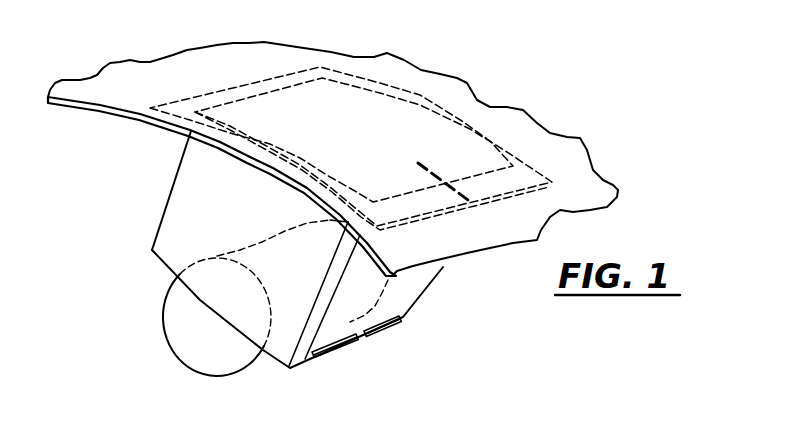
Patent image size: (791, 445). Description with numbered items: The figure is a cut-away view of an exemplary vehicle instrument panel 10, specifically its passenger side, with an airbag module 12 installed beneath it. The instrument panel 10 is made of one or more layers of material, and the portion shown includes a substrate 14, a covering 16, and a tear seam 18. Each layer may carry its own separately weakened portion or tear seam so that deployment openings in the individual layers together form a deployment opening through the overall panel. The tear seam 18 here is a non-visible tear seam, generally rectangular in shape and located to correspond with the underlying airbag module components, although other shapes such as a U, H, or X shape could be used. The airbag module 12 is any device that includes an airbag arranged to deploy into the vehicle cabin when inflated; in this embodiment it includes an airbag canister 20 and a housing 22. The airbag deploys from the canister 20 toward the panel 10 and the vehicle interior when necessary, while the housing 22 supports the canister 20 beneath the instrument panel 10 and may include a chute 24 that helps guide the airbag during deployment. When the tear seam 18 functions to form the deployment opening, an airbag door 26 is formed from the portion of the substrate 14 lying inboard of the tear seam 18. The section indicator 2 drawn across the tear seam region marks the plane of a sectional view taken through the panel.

The vehicle instrument panel 10 is at (478, 51).
The airbag module 12 is at (180, 242).
The substrate 14 is at (102, 112).
The covering 16 is at (600, 193).
The tear seam 18 is at (426, 196).
The airbag canister 20 is at (195, 327).
The housing 22 is at (407, 295).
The chute 24 is at (197, 189).
The airbag door 26 is at (349, 92).
The section line 2 is at (420, 166).